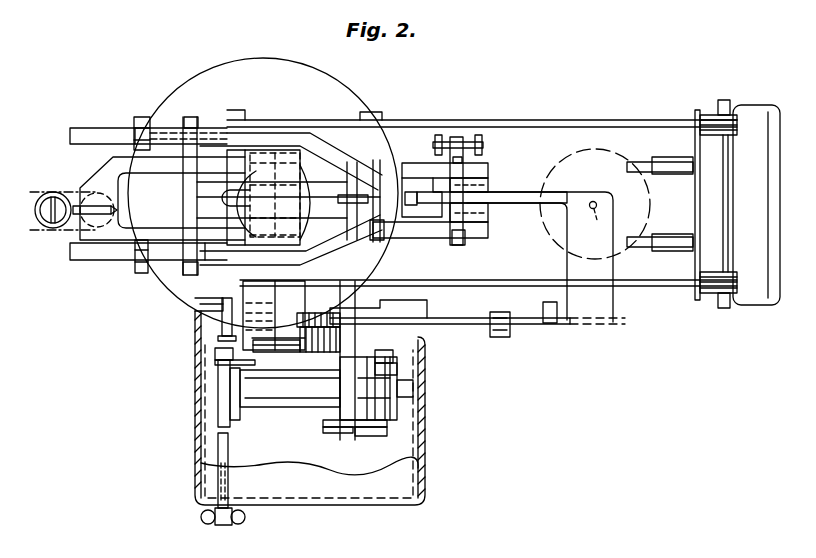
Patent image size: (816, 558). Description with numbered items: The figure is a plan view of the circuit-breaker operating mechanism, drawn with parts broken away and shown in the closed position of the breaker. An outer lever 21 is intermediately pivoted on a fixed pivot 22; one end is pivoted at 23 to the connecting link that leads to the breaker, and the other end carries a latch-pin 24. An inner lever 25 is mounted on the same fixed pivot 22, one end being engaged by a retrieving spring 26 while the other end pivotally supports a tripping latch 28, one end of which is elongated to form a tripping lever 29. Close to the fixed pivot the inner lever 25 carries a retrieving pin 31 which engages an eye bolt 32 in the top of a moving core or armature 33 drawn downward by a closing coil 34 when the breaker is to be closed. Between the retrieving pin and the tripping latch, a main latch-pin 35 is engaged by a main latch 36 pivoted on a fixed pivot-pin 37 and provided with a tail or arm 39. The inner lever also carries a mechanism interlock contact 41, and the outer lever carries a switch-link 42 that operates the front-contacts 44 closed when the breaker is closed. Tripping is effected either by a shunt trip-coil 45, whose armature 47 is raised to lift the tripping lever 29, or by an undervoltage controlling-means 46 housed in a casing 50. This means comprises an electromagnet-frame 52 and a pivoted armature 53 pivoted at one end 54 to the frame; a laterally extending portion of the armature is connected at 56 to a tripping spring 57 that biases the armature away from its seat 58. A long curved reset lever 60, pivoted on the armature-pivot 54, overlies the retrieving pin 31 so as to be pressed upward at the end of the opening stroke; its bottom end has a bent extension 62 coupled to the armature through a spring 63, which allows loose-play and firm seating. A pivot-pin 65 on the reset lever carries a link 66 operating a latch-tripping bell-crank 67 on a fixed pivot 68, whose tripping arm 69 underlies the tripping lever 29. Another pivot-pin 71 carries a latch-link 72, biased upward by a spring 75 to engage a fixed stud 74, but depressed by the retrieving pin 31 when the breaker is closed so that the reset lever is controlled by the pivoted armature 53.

The outer lever 21 is at (83, 128).
The fixed pivot 22 is at (187, 275).
The pivot 23 is at (143, 117).
The latch-pin 24 is at (487, 194).
The inner lever 25 is at (100, 172).
The retrieving spring 26 is at (40, 227).
The tripping latch 28 is at (437, 167).
The tripping lever 29 is at (573, 267).
The retrieving pin 31 is at (275, 290).
The eye bolt 32 is at (227, 195).
The moving core or armature 33 is at (228, 137).
The closing coil 34 is at (231, 74).
The main latch-pin 35 is at (342, 188).
The main latch 36 is at (338, 208).
The fixed pivot-pin 37 is at (424, 292).
The tail or arm 39 is at (329, 132).
The mechanism interlock contact 41 is at (483, 148).
The switch-link 42 is at (570, 119).
The front-contacts 44 is at (690, 160).
The shunt trip-coil 45 is at (588, 148).
The undervoltage controlling-means 46 is at (181, 479).
The armature 47 is at (589, 224).
The casing 50 is at (192, 437).
The electromagnet-frame 52 is at (277, 398).
The pivoted armature 53 is at (346, 388).
The armature-pivot 54 is at (342, 436).
The connection 56 is at (395, 356).
The tripping spring 57 is at (205, 376).
The seat 58 is at (200, 307).
The reset lever 60 is at (276, 355).
The bent extension 62 is at (405, 402).
The spring 63 is at (370, 444).
The pivot-pin 65 is at (322, 353).
The link 66 is at (450, 326).
The latch-tripping bell-crank 67 is at (532, 326).
The fixed pivot 68 is at (550, 328).
The tripping arm 69 is at (618, 320).
The pivot-pin 71 is at (367, 356).
The latch-link 72 is at (215, 350).
The fixed stud 74 is at (212, 330).
The spring 75 is at (304, 316).